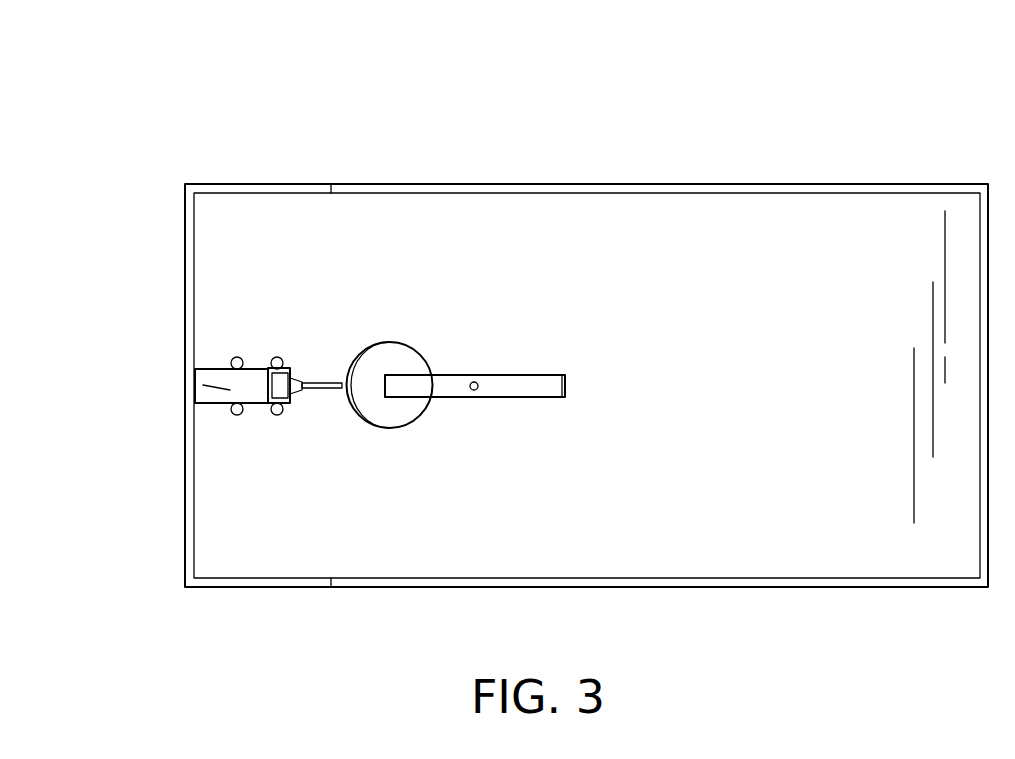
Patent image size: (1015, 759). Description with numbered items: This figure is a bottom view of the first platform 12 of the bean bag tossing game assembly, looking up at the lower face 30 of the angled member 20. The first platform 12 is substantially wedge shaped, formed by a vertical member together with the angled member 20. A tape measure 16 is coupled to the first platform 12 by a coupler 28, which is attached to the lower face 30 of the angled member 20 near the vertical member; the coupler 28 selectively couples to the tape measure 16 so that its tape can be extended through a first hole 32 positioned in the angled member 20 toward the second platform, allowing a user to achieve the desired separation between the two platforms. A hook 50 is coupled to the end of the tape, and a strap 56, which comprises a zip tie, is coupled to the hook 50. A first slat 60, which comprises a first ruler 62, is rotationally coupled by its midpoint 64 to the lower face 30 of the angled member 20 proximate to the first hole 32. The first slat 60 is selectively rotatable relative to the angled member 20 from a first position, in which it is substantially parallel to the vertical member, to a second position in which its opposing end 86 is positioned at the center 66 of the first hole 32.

The first platform 12 is at (569, 107).
The tape measure 16 is at (164, 349).
The angled member 20 is at (647, 258).
The coupler 28 is at (212, 377).
The lower face 30 is at (805, 381).
The first hole 32 is at (385, 397).
The hook 50 is at (302, 380).
The strap 56 is at (337, 383).
The first slat 60 is at (512, 397).
The first ruler 62 is at (547, 397).
The midpoint 64 is at (474, 390).
The center 66 is at (360, 414).
The opposing end 86 is at (461, 391).